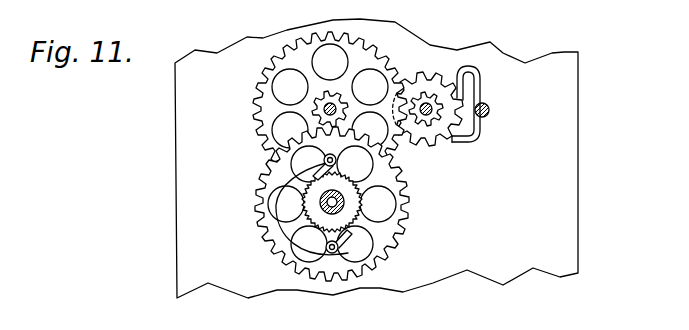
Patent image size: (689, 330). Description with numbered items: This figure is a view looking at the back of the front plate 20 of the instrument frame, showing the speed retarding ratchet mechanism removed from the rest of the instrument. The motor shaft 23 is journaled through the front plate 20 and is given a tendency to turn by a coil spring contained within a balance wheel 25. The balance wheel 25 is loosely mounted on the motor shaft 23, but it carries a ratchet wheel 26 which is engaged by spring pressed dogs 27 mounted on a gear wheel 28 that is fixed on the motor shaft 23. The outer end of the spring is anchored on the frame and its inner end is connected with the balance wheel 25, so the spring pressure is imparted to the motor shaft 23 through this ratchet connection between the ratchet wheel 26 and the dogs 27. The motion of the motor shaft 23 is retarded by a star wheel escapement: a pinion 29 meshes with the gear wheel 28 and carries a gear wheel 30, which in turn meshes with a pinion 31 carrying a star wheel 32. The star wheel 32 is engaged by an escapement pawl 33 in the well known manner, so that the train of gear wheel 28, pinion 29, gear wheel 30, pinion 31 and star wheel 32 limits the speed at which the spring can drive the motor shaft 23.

The front plate 20 is at (567, 203).
The motor shaft 23 is at (345, 197).
The balance wheel 25 is at (343, 210).
The ratchet wheel 26 is at (355, 207).
The spring pressed dogs 27 is at (323, 162).
The gear wheel 28 is at (388, 175).
The pinion 29 is at (317, 110).
The gear wheel 30 is at (360, 48).
The pinion 31 is at (422, 90).
The star wheel 32 is at (443, 143).
The escapement pawl 33 is at (481, 88).